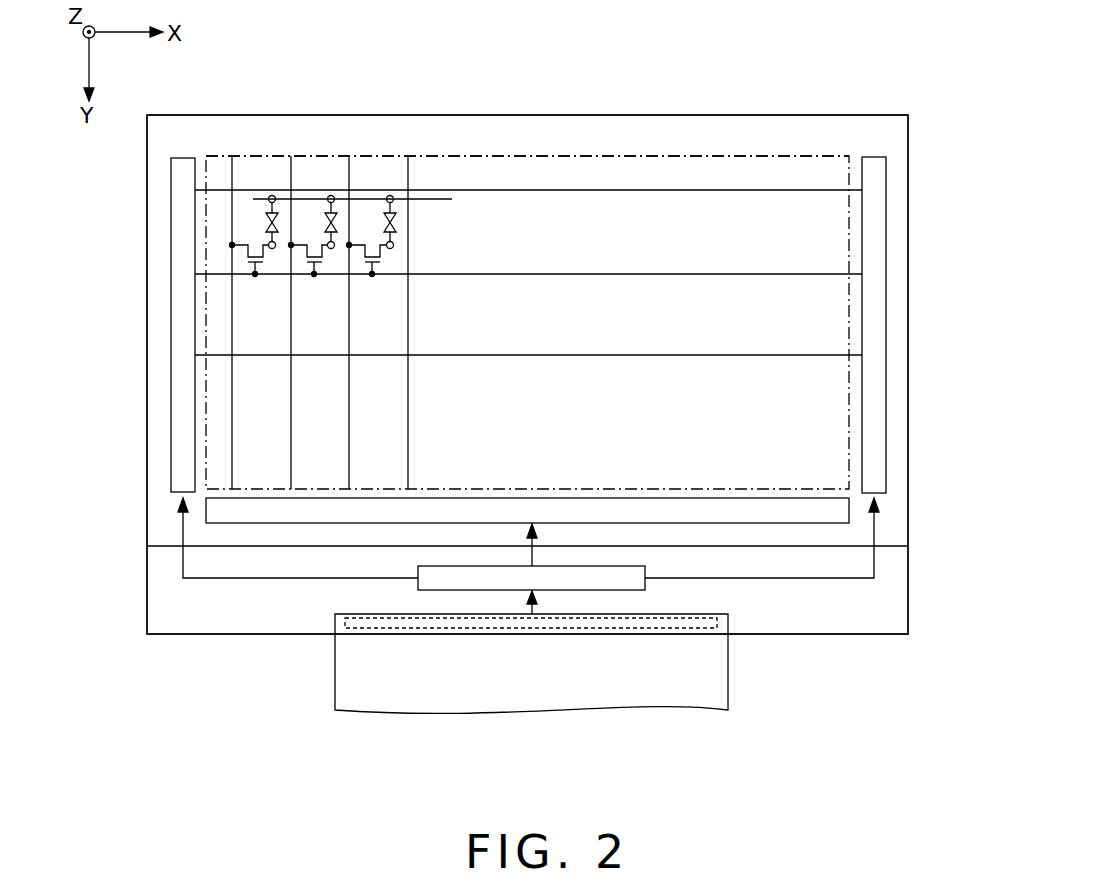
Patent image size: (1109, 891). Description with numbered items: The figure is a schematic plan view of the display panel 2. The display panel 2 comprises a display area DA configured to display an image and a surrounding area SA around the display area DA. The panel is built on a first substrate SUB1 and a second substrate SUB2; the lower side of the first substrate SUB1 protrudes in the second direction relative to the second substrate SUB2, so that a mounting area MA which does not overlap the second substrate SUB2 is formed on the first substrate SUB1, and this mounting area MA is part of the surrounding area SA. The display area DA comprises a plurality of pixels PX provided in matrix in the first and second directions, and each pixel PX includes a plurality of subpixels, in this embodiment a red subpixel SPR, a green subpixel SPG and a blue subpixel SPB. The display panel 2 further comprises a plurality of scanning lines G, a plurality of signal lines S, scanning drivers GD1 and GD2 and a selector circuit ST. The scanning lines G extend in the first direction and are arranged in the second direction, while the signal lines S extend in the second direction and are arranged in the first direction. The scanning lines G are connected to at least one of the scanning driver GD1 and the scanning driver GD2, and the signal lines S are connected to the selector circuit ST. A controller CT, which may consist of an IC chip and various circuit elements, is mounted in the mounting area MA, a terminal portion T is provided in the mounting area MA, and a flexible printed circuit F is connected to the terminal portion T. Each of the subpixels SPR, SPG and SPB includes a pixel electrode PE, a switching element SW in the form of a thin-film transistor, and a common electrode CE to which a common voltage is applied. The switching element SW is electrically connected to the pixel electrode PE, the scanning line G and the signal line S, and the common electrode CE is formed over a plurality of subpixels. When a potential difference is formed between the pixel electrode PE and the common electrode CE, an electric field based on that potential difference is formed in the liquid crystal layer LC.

The display panel 2 is at (786, 93).
The mounting area MA is at (845, 620).
The first substrate SUB1 is at (207, 635).
The second substrate SUB2 is at (166, 547).
The display area DA is at (593, 155).
The surrounding area SA is at (660, 132).
The scanning driver GD1 is at (171, 385).
The scanning driver GD2 is at (886, 370).
The scanning line G is at (705, 191).
The signal line S is at (232, 475).
The common electrode CE is at (392, 199).
The liquid crystal layer LC is at (393, 220).
The pixel electrode PE is at (394, 246).
The switching element SW is at (380, 258).
The pixel PX is at (407, 62).
The red subpixel SPR is at (253, 178).
The green subpixel SPG is at (314, 178).
The blue subpixel SPB is at (374, 178).
The selector circuit ST is at (598, 497).
The controller CT is at (613, 591).
The terminal portion T is at (712, 618).
The flexible printed circuit F is at (640, 711).